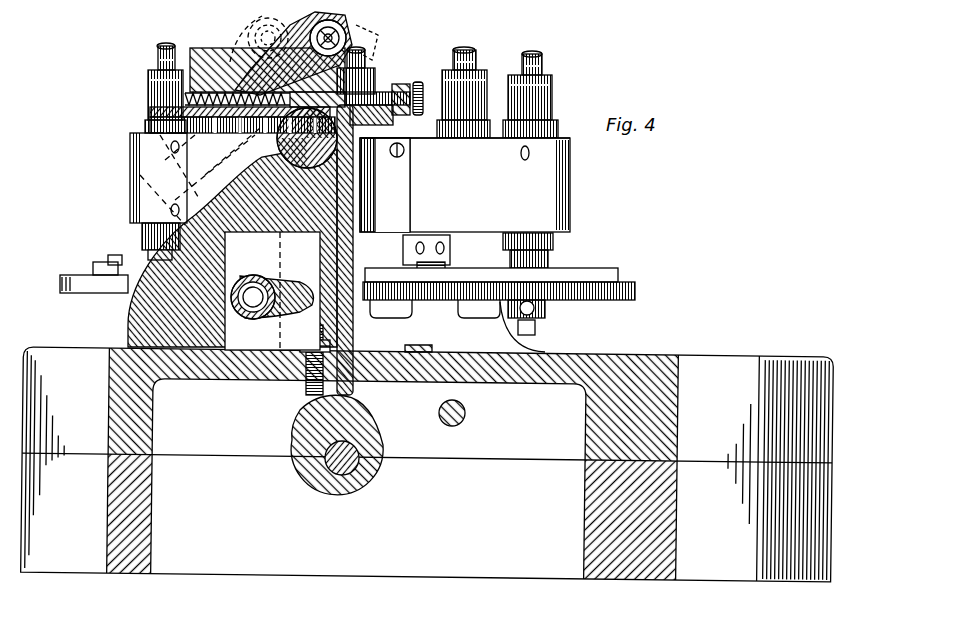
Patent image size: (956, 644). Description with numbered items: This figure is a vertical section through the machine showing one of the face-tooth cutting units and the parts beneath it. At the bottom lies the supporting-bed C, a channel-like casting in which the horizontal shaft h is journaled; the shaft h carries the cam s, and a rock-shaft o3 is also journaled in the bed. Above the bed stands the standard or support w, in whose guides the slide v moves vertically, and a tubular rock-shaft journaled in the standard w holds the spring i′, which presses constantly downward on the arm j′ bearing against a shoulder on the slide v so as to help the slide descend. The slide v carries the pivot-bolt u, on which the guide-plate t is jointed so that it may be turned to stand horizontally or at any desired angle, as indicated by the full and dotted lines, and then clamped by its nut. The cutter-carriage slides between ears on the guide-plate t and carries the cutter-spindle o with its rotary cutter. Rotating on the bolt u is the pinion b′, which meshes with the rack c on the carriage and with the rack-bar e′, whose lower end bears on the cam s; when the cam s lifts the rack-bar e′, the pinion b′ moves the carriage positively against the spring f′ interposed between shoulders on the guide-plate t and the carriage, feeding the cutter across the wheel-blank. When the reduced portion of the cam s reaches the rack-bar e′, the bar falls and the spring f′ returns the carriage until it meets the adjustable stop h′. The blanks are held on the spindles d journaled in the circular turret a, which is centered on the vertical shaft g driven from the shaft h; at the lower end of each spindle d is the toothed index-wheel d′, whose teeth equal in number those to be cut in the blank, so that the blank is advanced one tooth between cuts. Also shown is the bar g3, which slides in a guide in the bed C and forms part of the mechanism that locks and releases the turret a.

The supporting-bed C is at (427, 464).
The rock-shaft o3 is at (470, 416).
The cam s is at (350, 398).
The horizontal shaft h is at (340, 470).
The guide-plate t is at (130, 140).
The standard or support w is at (128, 318).
The arm j′ is at (290, 285).
The spring i′ is at (252, 275).
The pinion b′ is at (280, 140).
The rack c is at (242, 138).
The spring f′ is at (150, 110).
The vertical shaft g is at (267, 77).
The cutter-spindle o is at (345, 24).
The spindle d is at (148, 80).
The adjustable stop h′ is at (400, 86).
The circular carriage or turret a is at (465, 210).
The slide v is at (360, 197).
The rack-bar e′ is at (372, 176).
The toothed index-wheel d′ is at (592, 300).
The bar g3 is at (422, 346).
The joint or pivot-bolt u is at (160, 210).